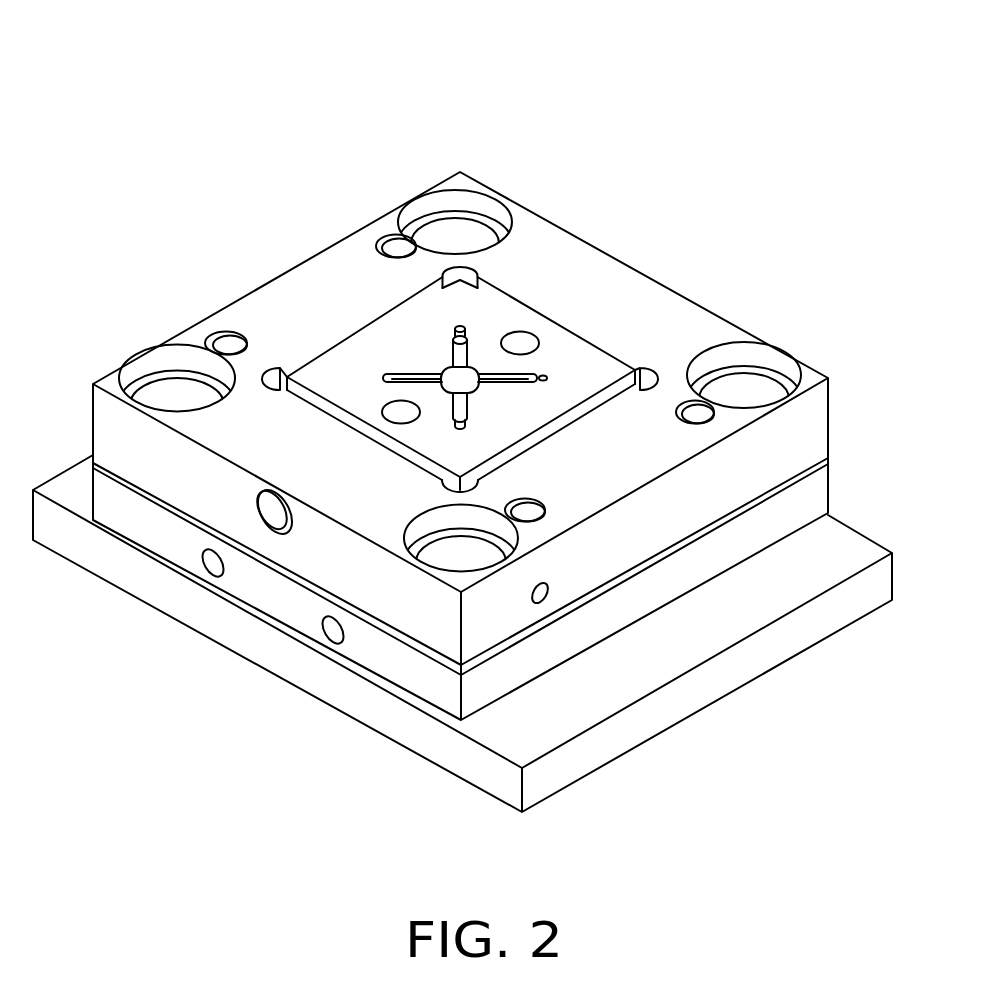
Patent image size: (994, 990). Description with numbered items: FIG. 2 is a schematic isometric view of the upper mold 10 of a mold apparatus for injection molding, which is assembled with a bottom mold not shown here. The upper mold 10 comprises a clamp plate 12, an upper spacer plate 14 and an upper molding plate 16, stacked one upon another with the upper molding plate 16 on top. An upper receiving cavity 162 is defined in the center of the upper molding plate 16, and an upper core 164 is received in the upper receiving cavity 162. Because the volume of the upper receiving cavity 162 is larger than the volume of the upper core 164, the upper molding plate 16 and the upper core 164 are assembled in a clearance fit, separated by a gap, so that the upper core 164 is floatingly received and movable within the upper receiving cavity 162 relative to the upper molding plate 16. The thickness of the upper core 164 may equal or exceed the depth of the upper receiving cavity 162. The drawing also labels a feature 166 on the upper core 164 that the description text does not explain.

The upper mold 10 is at (429, 26).
The clamp plate 12 is at (785, 645).
The upper spacer plate 14 is at (812, 498).
The upper molding plate 16 is at (500, 418).
The upper receiving cavity 162 is at (495, 293).
The upper core 164 is at (583, 375).
The hole 166 is at (520, 343).